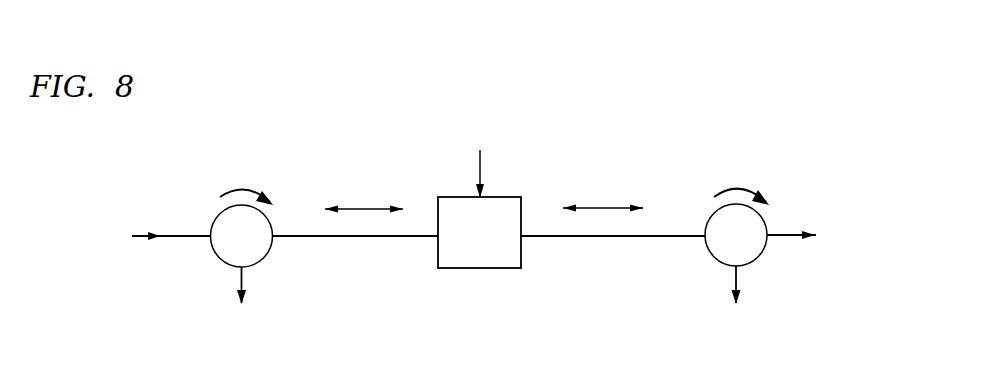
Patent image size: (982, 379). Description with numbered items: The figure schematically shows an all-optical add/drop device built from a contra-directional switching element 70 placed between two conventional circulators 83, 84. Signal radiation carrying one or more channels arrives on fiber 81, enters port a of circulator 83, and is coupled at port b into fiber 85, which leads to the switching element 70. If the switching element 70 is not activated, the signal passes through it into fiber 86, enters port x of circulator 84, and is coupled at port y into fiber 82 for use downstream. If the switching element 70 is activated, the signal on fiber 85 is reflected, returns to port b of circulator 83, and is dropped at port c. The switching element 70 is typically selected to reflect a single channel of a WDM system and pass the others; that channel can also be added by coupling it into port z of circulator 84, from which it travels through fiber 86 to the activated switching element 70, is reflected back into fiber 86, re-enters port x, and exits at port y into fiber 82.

The fiber 81 is at (176, 238).
The fiber 82 is at (797, 232).
The circulator 83 is at (221, 260).
The circulator 84 is at (715, 258).
The fiber 85 is at (374, 237).
The fiber 86 is at (620, 237).
The switching element 70 is at (437, 258).